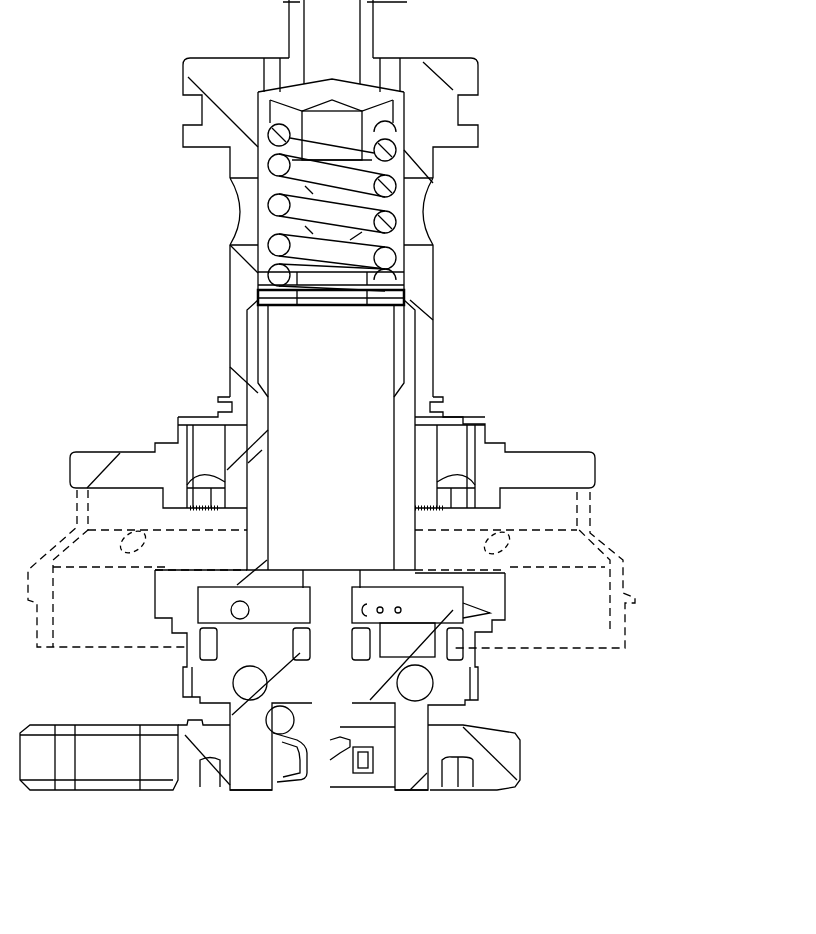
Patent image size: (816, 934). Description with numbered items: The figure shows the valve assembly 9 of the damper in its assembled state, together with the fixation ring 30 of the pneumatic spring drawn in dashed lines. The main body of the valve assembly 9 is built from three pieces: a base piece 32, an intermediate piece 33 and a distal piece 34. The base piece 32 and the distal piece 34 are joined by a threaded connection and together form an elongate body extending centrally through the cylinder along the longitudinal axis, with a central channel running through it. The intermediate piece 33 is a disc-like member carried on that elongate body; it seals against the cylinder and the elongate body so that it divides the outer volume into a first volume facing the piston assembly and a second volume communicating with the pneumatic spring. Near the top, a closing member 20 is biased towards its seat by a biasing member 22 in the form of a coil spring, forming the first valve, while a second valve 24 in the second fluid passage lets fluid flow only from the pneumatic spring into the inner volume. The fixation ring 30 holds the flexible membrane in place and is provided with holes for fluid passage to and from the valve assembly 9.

The valve assembly 9 is at (556, 220).
The closing member 20 is at (377, 110).
The biasing member 22 is at (393, 217).
The second valve 24 is at (387, 57).
The fixation ring 30 is at (590, 535).
The base piece 32 is at (402, 447).
The intermediate piece 33 is at (493, 468).
The distal piece 34 is at (467, 137).